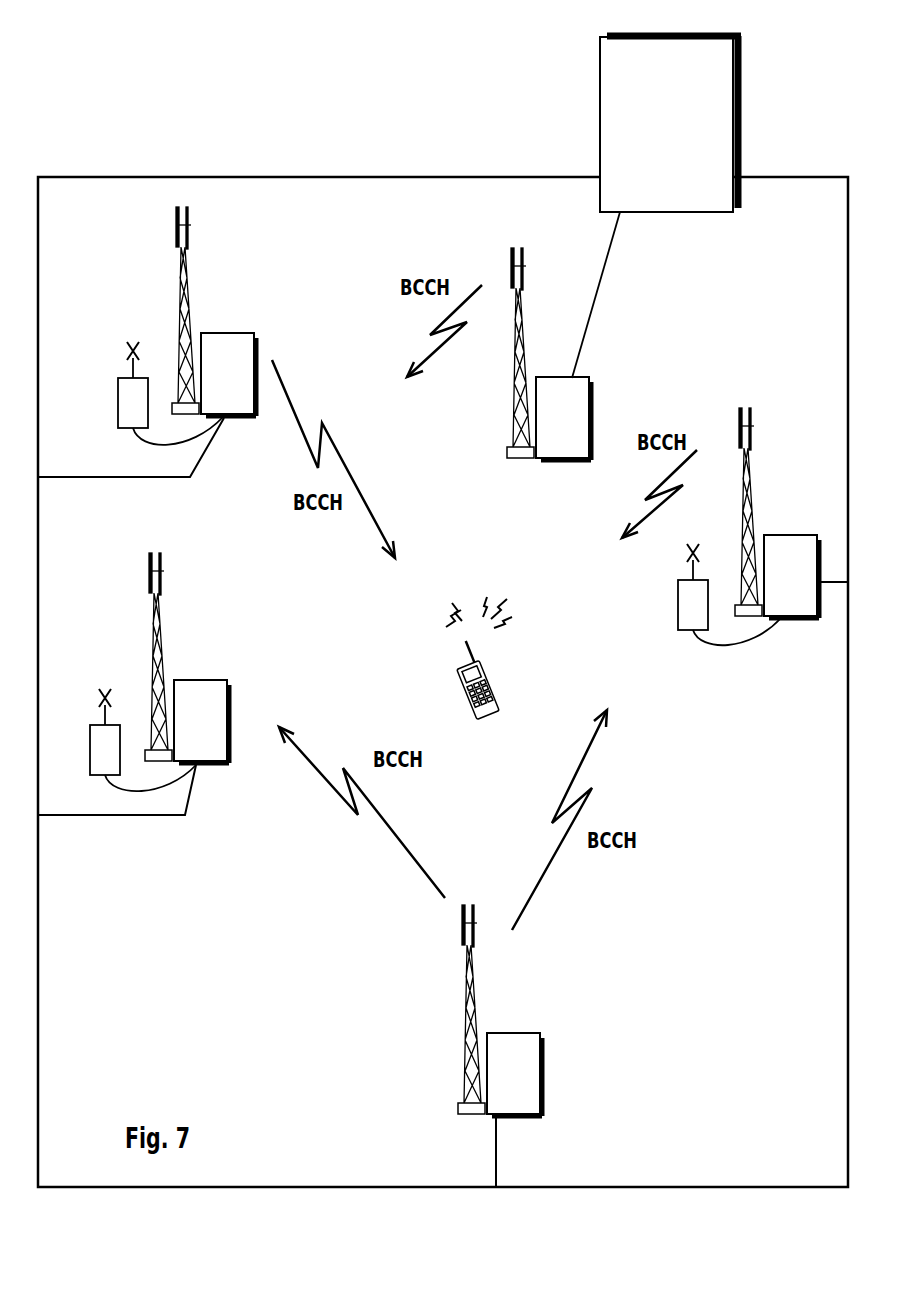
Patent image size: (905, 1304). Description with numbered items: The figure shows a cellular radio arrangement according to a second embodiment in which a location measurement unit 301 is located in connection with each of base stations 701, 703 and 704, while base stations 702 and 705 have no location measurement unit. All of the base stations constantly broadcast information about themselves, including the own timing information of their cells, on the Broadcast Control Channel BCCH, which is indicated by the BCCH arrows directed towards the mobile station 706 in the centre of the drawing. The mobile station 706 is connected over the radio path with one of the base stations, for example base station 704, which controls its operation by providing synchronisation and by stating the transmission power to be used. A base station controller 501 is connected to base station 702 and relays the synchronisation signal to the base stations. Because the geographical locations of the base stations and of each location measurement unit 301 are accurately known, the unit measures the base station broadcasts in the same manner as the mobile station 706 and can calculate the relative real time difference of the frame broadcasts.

The base station controller 501 is at (641, 214).
The base station 701 is at (236, 420).
The base station 702 is at (548, 462).
The base station 703 is at (202, 766).
The base station 704 is at (793, 620).
The base station 705 is at (513, 1116).
The mobile station 706 is at (495, 708).
The location measurement unit 301 is at (118, 405).